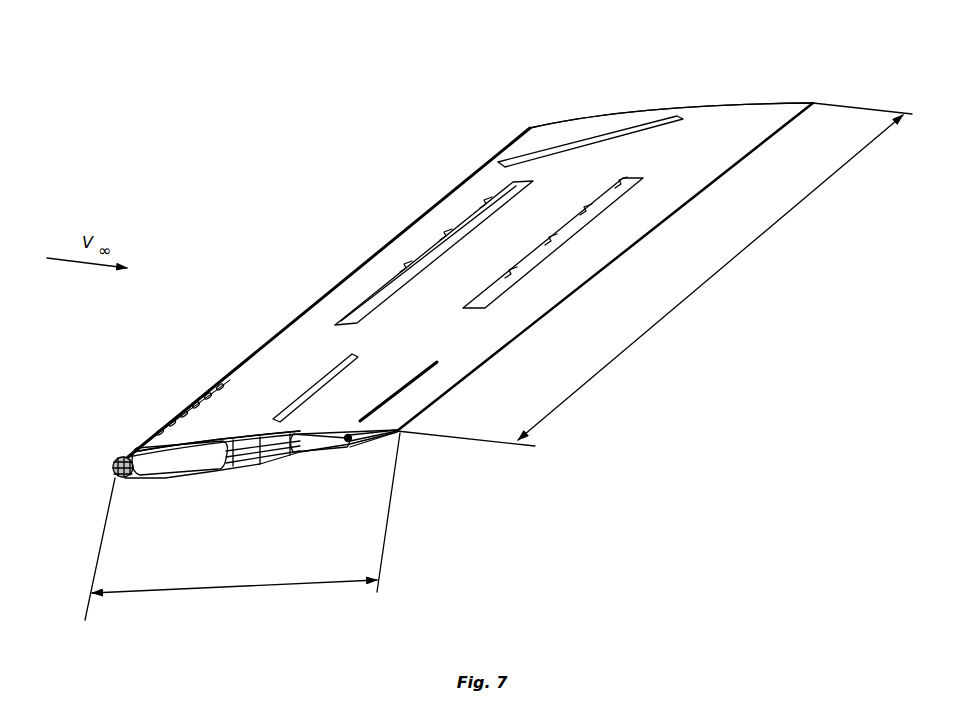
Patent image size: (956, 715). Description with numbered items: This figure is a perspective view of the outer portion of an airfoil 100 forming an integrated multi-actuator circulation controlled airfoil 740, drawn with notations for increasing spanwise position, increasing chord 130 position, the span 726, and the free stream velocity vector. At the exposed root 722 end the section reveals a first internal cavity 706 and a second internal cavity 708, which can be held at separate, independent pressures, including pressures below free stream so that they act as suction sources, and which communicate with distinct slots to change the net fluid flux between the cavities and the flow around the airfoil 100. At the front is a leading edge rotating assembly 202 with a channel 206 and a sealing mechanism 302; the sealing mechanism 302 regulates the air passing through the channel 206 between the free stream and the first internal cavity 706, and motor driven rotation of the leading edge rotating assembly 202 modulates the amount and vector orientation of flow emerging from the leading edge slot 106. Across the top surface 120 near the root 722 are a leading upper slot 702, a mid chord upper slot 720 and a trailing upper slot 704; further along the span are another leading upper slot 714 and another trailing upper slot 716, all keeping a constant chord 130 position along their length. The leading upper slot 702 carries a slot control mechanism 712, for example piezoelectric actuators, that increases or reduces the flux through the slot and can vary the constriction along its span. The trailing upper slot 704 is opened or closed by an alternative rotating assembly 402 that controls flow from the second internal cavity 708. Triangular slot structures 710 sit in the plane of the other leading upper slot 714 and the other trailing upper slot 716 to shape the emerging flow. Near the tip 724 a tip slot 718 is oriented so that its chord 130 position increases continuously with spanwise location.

The airfoil 100 is at (693, 140).
The leading edge slot 106 is at (117, 482).
The top surface 120 is at (687, 183).
The chord 130 is at (205, 590).
The leading edge rotating assembly 202 is at (115, 460).
The channel 206 is at (112, 468).
The sealing mechanism 302 is at (132, 455).
The alternative rotating assembly 402 is at (348, 444).
The leading upper slot 702 is at (220, 377).
The trailing upper slot 704 is at (412, 385).
The first internal cavity 706 is at (178, 460).
The second internal cavity 708 is at (317, 442).
The slot structures 710 is at (482, 213).
The slot control mechanism 712 is at (178, 410).
The other leading upper slot 714 is at (383, 285).
The other trailing upper slot 716 is at (507, 283).
The tip slot 718 is at (528, 147).
The mid chord upper slot 720 is at (273, 420).
The root 722 is at (255, 457).
The tip 724 is at (810, 104).
The span 726 is at (720, 280).
The integrated multi-actuator circulation controlled airfoil 740 is at (840, 55).